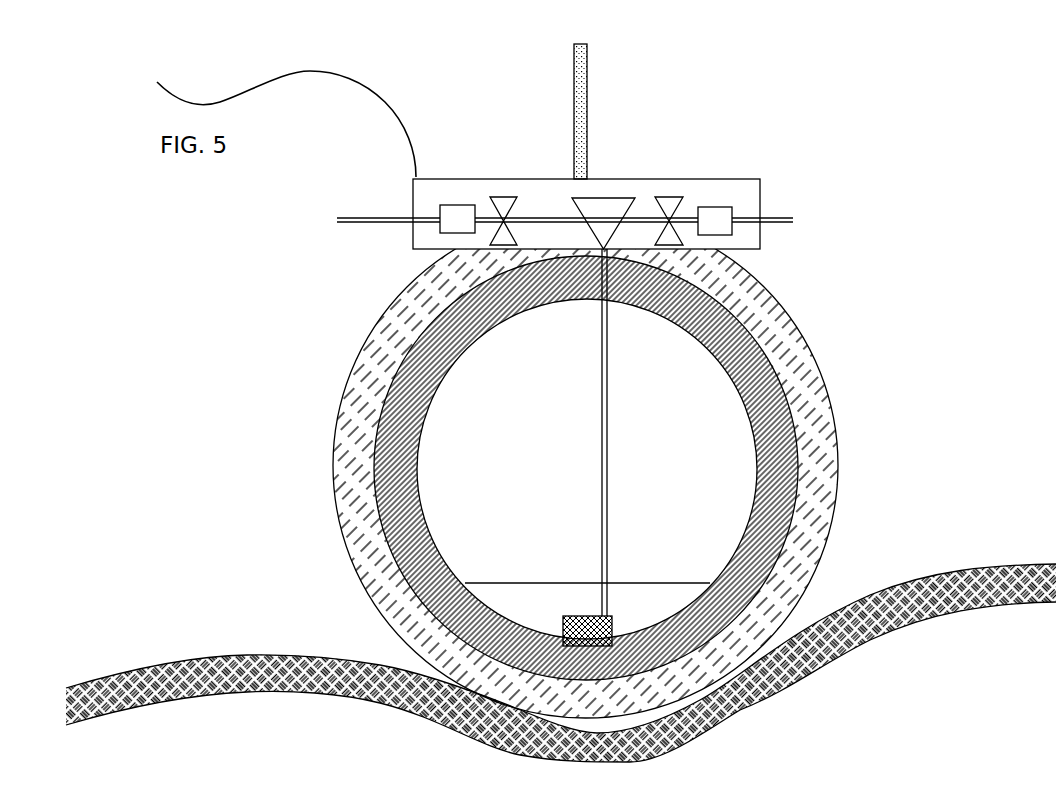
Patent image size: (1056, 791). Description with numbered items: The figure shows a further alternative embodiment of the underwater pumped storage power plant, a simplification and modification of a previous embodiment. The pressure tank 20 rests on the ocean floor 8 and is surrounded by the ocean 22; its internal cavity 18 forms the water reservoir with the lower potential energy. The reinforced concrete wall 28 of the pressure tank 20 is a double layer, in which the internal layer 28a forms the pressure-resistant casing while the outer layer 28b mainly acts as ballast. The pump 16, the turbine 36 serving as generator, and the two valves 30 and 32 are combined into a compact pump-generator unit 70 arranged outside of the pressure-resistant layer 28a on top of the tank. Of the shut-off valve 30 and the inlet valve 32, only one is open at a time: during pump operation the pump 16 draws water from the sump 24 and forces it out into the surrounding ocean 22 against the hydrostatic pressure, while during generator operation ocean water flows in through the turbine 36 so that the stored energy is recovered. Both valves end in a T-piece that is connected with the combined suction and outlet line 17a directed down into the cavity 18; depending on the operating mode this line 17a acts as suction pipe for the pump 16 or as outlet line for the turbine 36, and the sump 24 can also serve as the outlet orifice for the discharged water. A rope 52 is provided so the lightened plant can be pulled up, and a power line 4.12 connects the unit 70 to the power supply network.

The ocean floor 8 is at (253, 653).
The pressure tank 20 is at (631, 465).
The reinforced concrete wall 28 is at (631, 465).
The internal layer 28a is at (797, 472).
The outer layer 28b is at (820, 538).
The internal cavity 18 is at (587, 530).
The surrounding ocean 22 is at (614, 412).
The combined suction and outlet line 17a is at (608, 497).
The sump 24 is at (590, 637).
The pump-generator unit 70 is at (589, 222).
The turbine 36 is at (440, 234).
The inlet valve 32 is at (500, 197).
The shut-off valve 30 is at (672, 196).
The pump 16 is at (724, 204).
The rope 52 is at (587, 93).
The cable 4.12 is at (319, 74).